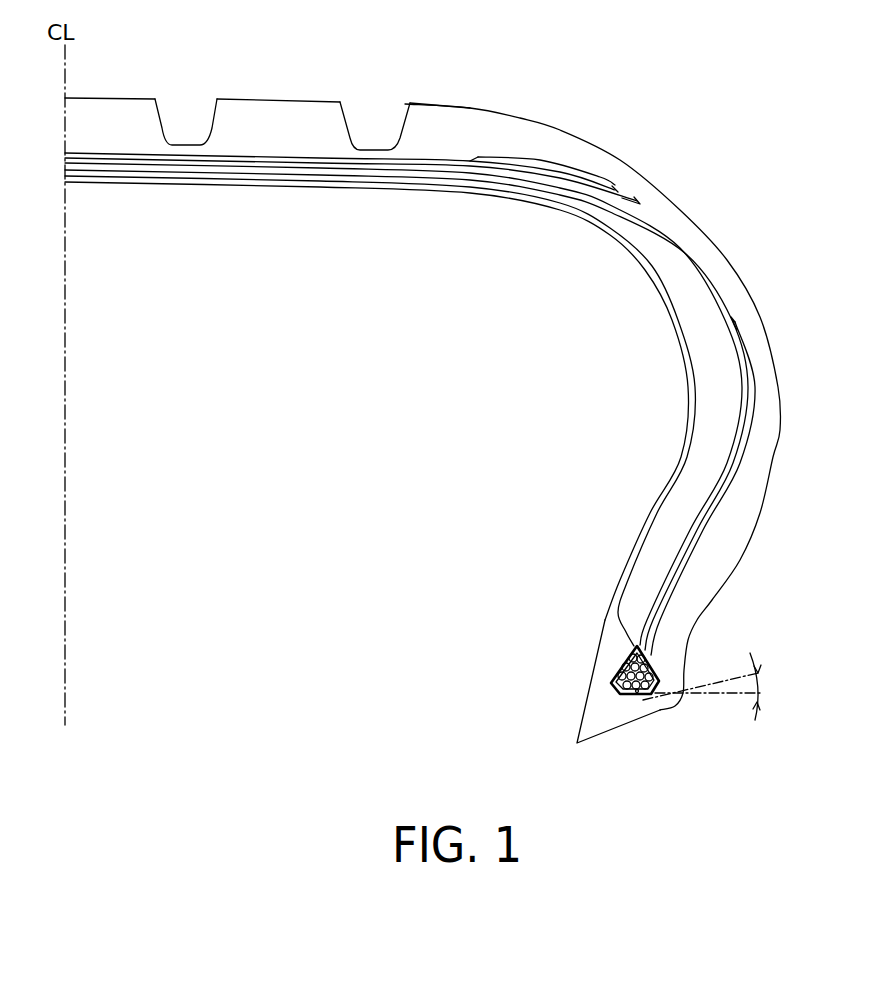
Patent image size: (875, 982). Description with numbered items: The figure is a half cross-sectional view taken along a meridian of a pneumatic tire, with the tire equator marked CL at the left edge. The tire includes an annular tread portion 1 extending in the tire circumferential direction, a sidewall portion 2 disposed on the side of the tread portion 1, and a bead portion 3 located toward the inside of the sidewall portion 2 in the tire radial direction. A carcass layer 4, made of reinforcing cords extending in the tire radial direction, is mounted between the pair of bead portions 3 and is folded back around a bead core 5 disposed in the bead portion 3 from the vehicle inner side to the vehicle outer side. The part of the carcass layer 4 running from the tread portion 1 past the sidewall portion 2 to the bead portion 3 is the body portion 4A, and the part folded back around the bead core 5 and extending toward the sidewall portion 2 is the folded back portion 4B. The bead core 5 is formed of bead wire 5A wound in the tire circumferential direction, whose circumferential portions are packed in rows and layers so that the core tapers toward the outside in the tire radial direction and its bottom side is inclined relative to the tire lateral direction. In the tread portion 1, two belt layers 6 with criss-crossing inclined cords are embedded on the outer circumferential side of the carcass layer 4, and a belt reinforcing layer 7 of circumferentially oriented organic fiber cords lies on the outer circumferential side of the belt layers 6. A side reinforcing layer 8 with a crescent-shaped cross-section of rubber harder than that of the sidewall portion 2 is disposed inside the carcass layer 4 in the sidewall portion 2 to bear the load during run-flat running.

The tread portion 1 is at (108, 85).
The sidewall portion 2 is at (783, 462).
The bead portion 3 is at (694, 718).
The carcass layer 4 is at (577, 192).
The body portion 4A is at (613, 673).
The folded back portion 4B is at (655, 663).
The bead core 5 is at (612, 692).
The bead wire 5A is at (641, 703).
The belt layer 6 is at (158, 162).
The belt reinforcing layer 7 is at (503, 167).
The side reinforcing layer 8 is at (690, 318).